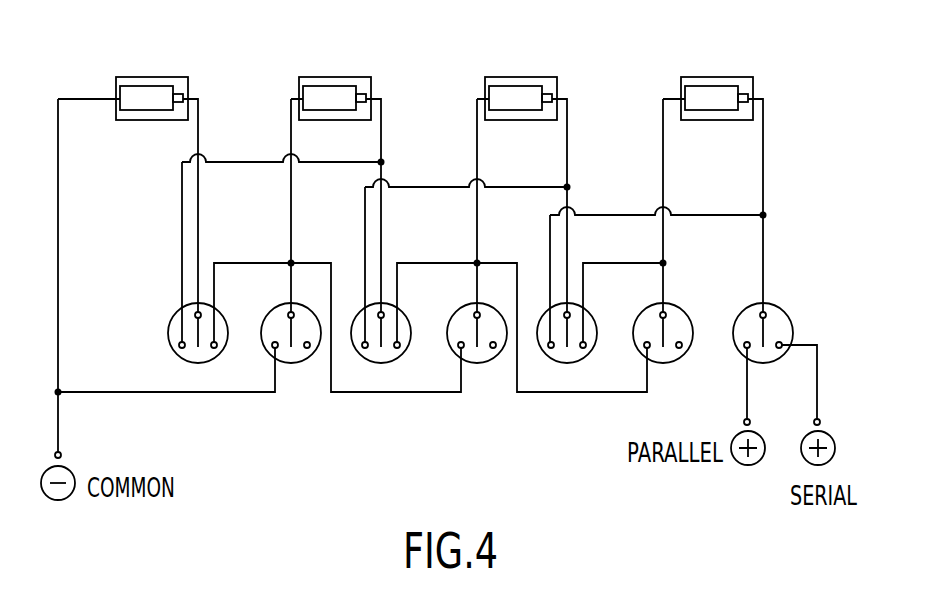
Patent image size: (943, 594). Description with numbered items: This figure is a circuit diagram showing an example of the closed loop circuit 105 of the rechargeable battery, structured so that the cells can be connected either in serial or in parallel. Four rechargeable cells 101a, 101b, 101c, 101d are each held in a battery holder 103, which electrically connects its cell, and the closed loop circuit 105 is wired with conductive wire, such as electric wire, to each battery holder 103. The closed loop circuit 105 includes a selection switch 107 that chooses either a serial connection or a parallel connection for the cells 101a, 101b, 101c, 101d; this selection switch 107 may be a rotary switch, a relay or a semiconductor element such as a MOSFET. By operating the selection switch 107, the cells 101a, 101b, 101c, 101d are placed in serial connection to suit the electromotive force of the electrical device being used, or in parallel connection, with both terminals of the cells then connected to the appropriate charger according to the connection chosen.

The cell 101a is at (140, 86).
The cell 101b is at (315, 86).
The cell 101c is at (512, 86).
The cell 101d is at (698, 86).
The battery holder 103 is at (180, 77).
The closed loop circuit 105 is at (511, 267).
The selection switch 107 is at (378, 361).